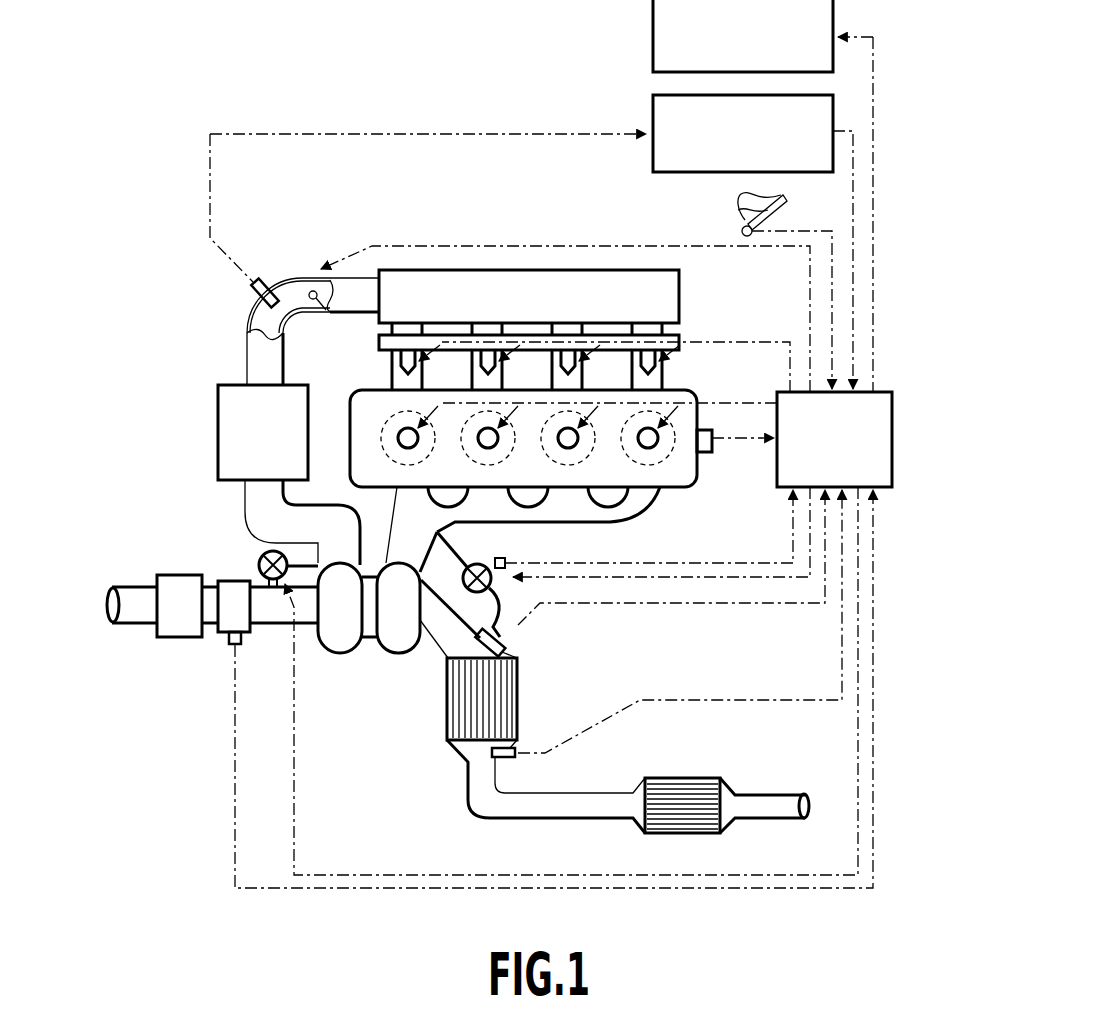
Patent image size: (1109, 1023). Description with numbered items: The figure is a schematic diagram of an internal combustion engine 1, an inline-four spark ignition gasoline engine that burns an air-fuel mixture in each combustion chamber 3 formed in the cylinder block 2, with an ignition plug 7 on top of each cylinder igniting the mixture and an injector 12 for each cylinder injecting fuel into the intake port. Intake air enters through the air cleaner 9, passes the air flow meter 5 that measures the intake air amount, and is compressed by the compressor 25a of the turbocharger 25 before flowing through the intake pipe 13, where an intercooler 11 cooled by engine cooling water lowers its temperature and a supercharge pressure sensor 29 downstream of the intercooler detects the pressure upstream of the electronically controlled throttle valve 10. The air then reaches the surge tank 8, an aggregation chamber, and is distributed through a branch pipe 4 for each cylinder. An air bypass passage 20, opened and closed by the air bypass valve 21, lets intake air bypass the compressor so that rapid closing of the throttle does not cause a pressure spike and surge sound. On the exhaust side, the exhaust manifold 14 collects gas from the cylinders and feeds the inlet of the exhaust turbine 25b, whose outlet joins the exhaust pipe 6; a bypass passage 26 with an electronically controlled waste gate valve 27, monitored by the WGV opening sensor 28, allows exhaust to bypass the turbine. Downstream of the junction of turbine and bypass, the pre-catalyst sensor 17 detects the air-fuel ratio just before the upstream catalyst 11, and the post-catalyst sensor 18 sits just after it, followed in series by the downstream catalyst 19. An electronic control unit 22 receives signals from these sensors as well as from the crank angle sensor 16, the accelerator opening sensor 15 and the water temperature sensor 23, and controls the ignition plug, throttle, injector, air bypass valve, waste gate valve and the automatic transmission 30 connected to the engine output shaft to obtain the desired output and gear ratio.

The internal combustion engine 1 is at (553, 211).
The cylinder block 2 is at (693, 392).
The combustion chamber 3 is at (383, 435).
The branch pipe 4 is at (668, 360).
The air flow meter 5 is at (222, 630).
The exhaust pipe 6 is at (443, 650).
The ignition plug 7 is at (403, 430).
The surge tank 8 is at (445, 270).
The air cleaner 9 is at (180, 585).
The throttle valve 10 is at (312, 291).
The intercooler / upstream catalyst 11 is at (226, 445).
The injector 12 is at (385, 350).
The intake pipe 13 is at (249, 372).
The exhaust manifold 14 is at (565, 505).
The accelerator opening sensor 15 is at (740, 228).
The crank angle sensor 16 is at (712, 433).
The pre-catalyst sensor 17 is at (510, 648).
The post-catalyst sensor 18 is at (516, 758).
The downstream catalyst 19 is at (680, 778).
The air bypass passage 20 is at (305, 548).
The air bypass valve 21 is at (258, 563).
The electronic control unit 22 is at (777, 470).
The water temperature sensor 23 is at (652, 120).
The turbocharger 25 is at (365, 611).
The compressor 25a is at (336, 645).
The exhaust turbine 25b is at (400, 645).
The bypass passage 26 is at (447, 541).
The waste gate valve 27 is at (505, 584).
The WGV opening sensor 28 is at (507, 562).
The supercharge pressure sensor 29 is at (255, 290).
The automatic transmission 30 is at (652, 32).